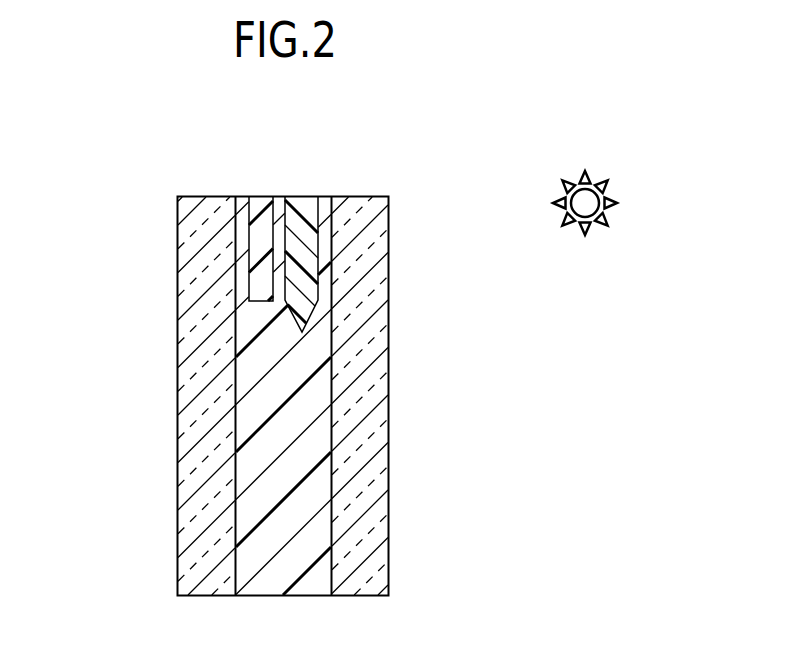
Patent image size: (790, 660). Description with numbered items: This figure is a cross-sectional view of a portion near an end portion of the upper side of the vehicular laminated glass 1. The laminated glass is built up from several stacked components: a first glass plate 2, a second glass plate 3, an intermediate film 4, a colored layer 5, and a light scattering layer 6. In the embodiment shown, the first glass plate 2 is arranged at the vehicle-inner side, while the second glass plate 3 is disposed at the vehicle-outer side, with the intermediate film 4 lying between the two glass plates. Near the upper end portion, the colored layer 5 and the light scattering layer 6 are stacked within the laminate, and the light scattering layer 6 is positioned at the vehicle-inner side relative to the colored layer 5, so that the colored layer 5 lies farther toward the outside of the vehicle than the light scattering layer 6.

The vehicular laminated glass 1 is at (290, 152).
The first glass plate 2 is at (200, 452).
The second glass plate 3 is at (360, 441).
The intermediate film 4 is at (303, 575).
The colored layer 5 is at (303, 252).
The light scattering layer 6 is at (258, 258).